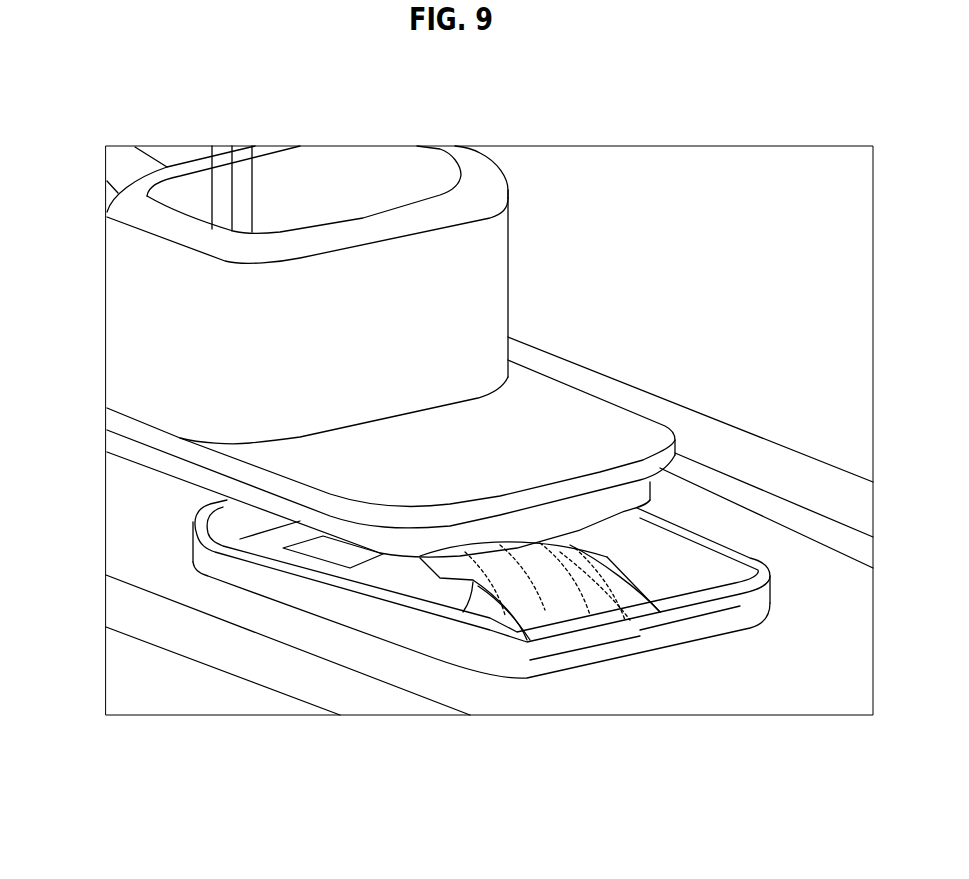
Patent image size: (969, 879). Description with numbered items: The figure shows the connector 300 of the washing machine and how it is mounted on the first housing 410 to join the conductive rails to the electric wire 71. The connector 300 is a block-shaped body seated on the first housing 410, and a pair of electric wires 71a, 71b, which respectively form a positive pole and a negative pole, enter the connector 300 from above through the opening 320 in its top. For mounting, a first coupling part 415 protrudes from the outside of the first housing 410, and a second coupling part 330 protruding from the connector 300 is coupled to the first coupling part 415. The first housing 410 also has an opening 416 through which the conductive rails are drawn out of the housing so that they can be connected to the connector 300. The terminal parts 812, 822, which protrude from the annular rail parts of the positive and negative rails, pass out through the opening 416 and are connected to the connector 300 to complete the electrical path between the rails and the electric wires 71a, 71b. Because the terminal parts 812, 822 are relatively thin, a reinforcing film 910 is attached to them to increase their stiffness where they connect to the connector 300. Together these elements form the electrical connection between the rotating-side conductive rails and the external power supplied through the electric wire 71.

The electric wire 71 is at (224, 139).
The electric wire 71a is at (210, 187).
The electric wire 71b is at (269, 161).
The opening 320 is at (360, 186).
The connector 300 is at (356, 267).
The second coupling part 330 is at (167, 463).
The reinforcing film 910 is at (605, 558).
The first housing 410 is at (472, 643).
The first coupling part 415 is at (747, 607).
The opening 416 is at (668, 587).
The terminal part 812 is at (527, 643).
The terminal part 822 is at (600, 603).